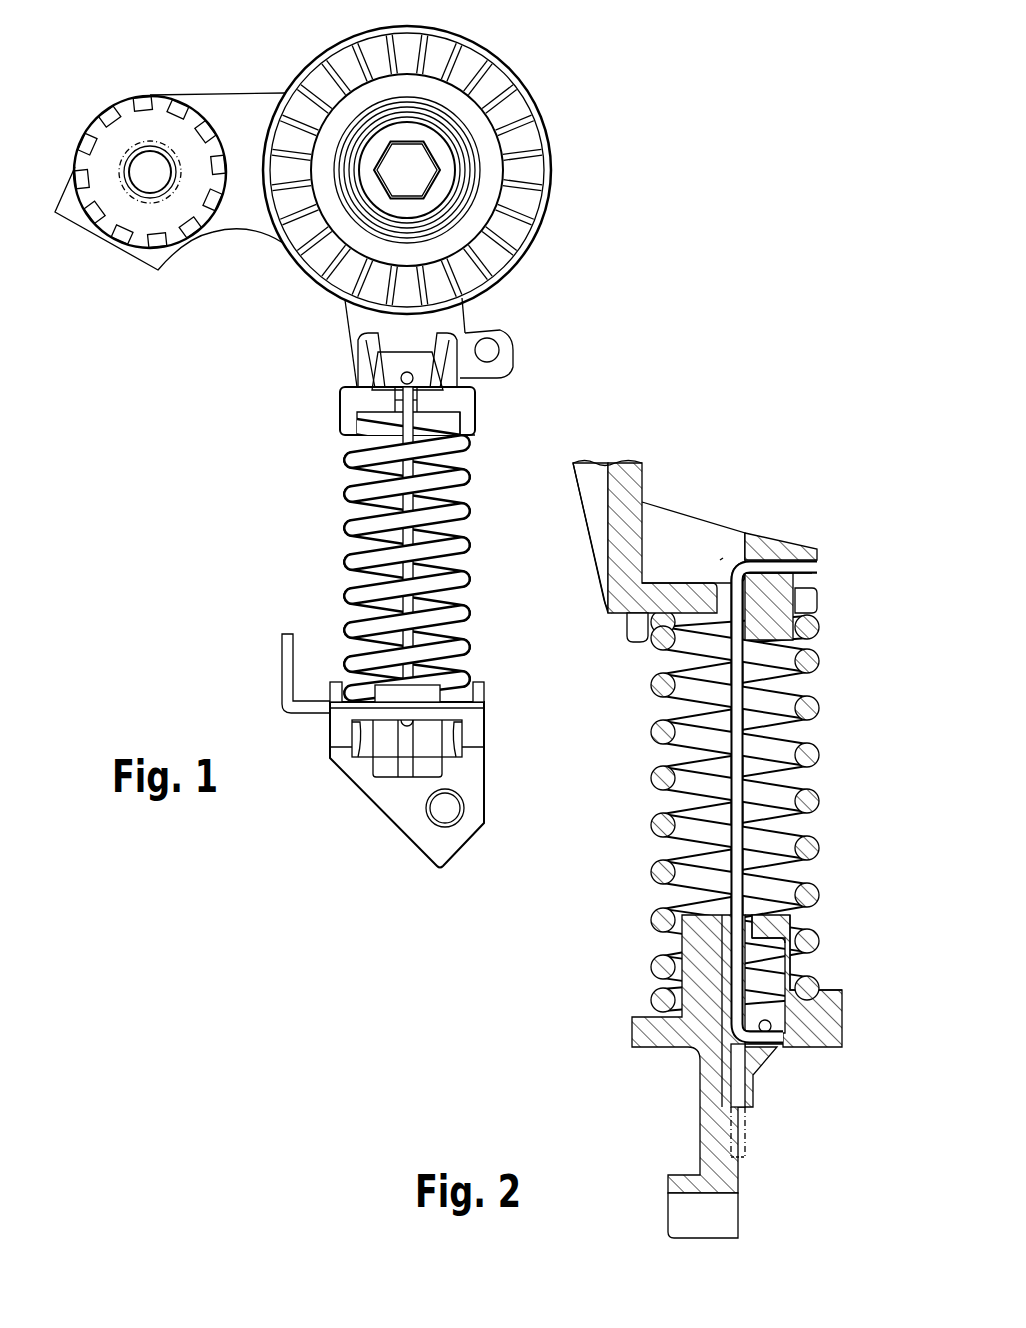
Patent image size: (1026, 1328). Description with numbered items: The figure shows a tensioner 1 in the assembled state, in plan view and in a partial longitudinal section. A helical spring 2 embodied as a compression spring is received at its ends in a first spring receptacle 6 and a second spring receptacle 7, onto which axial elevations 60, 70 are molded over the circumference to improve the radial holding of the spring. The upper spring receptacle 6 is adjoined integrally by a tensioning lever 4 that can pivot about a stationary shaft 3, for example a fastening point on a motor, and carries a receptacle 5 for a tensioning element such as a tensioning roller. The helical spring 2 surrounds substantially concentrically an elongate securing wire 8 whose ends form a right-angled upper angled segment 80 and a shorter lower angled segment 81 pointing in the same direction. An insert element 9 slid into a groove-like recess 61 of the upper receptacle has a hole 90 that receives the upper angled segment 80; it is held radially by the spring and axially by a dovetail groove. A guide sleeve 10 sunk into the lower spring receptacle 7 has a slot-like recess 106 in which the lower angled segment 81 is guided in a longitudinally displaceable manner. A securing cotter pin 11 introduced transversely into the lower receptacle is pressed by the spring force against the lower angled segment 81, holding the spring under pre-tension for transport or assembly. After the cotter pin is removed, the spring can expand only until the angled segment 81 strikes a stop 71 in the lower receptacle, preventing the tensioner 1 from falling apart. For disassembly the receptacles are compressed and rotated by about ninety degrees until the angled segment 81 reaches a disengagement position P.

In FIG. 1, the tensioner 1 is at (568, 125).
In FIG. 2, the tensioner 1 is at (770, 463).
In FIG. 1, the helical spring 2 is at (387, 554).
In FIG. 2, the helical spring 2 is at (772, 802).
In FIG. 1, the stationary shaft 3 is at (143, 162).
In FIG. 1, the tensioning lever 4 is at (240, 103).
In FIG. 1, the receptacle 5 is at (470, 43).
In FIG. 1, the first spring receptacle 6 is at (340, 395).
In FIG. 2, the first spring receptacle 6 is at (605, 615).
In FIG. 1, the second spring receptacle 7 is at (423, 777).
In FIG. 2, the second spring receptacle 7 is at (822, 1050).
In FIG. 1, the securing wire 8 is at (410, 542).
In FIG. 2, the securing wire 8 is at (737, 820).
In FIG. 1, the insert element 9 is at (425, 370).
In FIG. 2, the insert element 9 is at (770, 540).
In FIG. 1, the guide sleeve 10 is at (387, 763).
In FIG. 2, the guide sleeve 10 is at (723, 1072).
In FIG. 1, the securing cotter pin 11 is at (287, 660).
In FIG. 2, the securing cotter pin 11 is at (763, 1048).
In FIG. 1, the axial elevations 60 is at (470, 423).
In FIG. 2, the axial elevations 60 is at (636, 641).
In FIG. 1, the groove-like recess 61 is at (407, 405).
In FIG. 2, the groove-like recess 61 is at (808, 602).
In FIG. 1, the axial elevations 70 is at (417, 688).
In FIG. 2, the axial elevations 70 is at (833, 990).
In FIG. 2, the stop 71 is at (765, 940).
In FIG. 1, the upper angled segment 80 is at (400, 375).
In FIG. 2, the upper angled segment 80 is at (808, 565).
In FIG. 1, the lower angled segment 81 is at (403, 740).
In FIG. 2, the lower angled segment 81 is at (752, 1063).
In FIG. 2, the hole 90 is at (723, 558).
In FIG. 2, the slot-like recess 106 is at (772, 1027).
In FIG. 2, the disengagement position P is at (748, 1140).